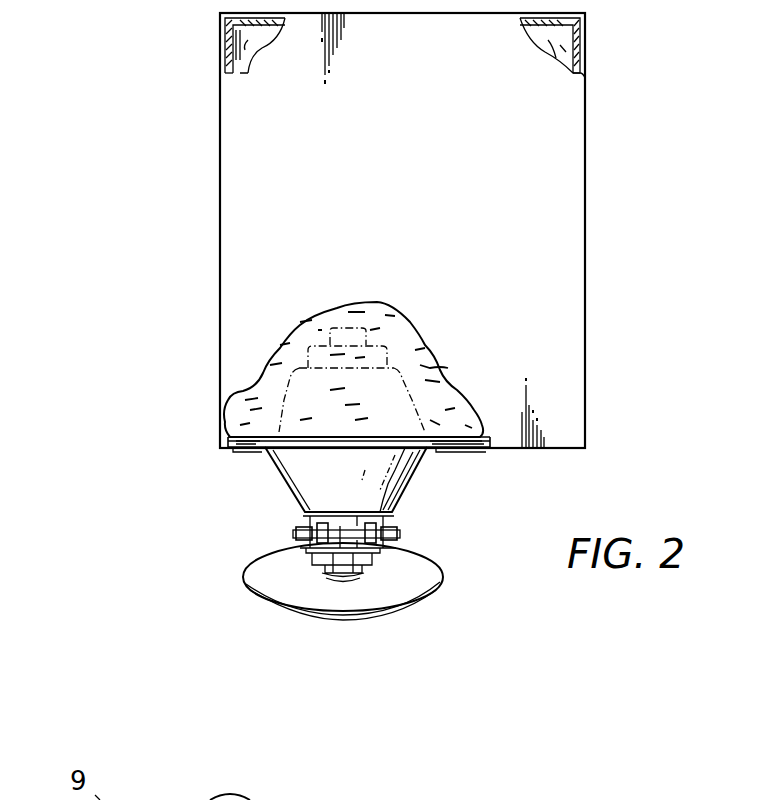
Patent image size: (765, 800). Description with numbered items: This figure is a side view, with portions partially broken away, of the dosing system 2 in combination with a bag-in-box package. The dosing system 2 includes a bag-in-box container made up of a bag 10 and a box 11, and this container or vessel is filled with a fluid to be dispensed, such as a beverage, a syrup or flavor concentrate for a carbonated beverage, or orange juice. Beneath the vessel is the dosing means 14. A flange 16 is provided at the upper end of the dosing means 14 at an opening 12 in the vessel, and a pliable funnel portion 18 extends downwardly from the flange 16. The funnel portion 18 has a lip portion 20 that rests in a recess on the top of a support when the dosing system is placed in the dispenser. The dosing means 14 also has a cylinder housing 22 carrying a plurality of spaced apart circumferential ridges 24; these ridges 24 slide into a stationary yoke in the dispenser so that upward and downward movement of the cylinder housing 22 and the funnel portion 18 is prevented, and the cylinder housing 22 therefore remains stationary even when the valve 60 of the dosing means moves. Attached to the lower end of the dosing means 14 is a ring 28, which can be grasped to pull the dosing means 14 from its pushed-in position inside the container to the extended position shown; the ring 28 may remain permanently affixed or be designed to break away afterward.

The dosing system 2 is at (176, 284).
The bag 10 is at (253, 44).
The box 11 is at (220, 139).
The opening 12 is at (237, 448).
The dosing means 14 is at (258, 608).
The flange 16 is at (229, 420).
The funnel portion 18 is at (300, 484).
The lip portion 20 is at (398, 514).
The cylinder housing 22 is at (398, 548).
The circumferential ridges 24 is at (296, 534).
The ring 28 is at (395, 616).
The valve 60 is at (345, 585).